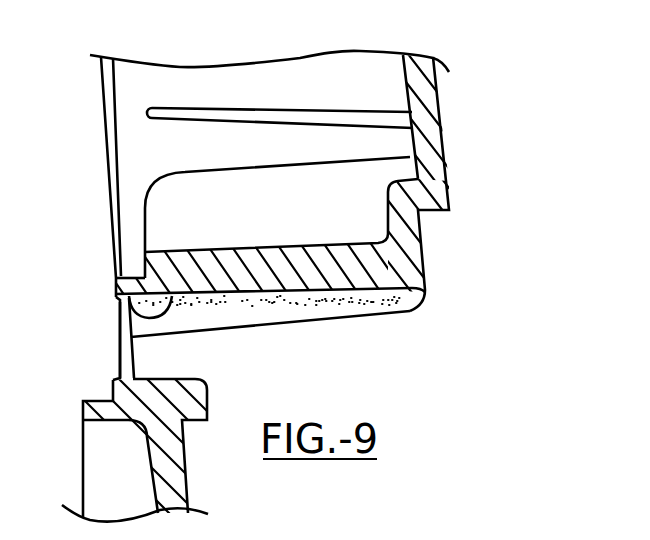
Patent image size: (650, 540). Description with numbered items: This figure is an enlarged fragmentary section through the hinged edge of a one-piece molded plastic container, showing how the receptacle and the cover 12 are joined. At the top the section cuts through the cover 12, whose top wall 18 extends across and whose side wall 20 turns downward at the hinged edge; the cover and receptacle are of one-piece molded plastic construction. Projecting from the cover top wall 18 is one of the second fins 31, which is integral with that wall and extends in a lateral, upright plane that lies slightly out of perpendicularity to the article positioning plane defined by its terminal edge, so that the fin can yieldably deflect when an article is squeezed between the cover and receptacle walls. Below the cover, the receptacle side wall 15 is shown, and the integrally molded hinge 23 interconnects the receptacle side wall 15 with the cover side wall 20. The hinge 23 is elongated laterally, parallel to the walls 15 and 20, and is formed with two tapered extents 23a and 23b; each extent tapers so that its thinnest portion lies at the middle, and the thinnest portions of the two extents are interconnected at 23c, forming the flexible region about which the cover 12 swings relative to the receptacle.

The cover 12 is at (325, 270).
The top wall 18 is at (430, 117).
The side wall 20 is at (317, 277).
The second fins 31 is at (208, 107).
The hinge 23 is at (127, 294).
The tapered extent 23a is at (132, 362).
The tapered extent 23b is at (150, 314).
The interconnection of thinnest extents 23c is at (117, 335).
The side wall 15 is at (177, 488).